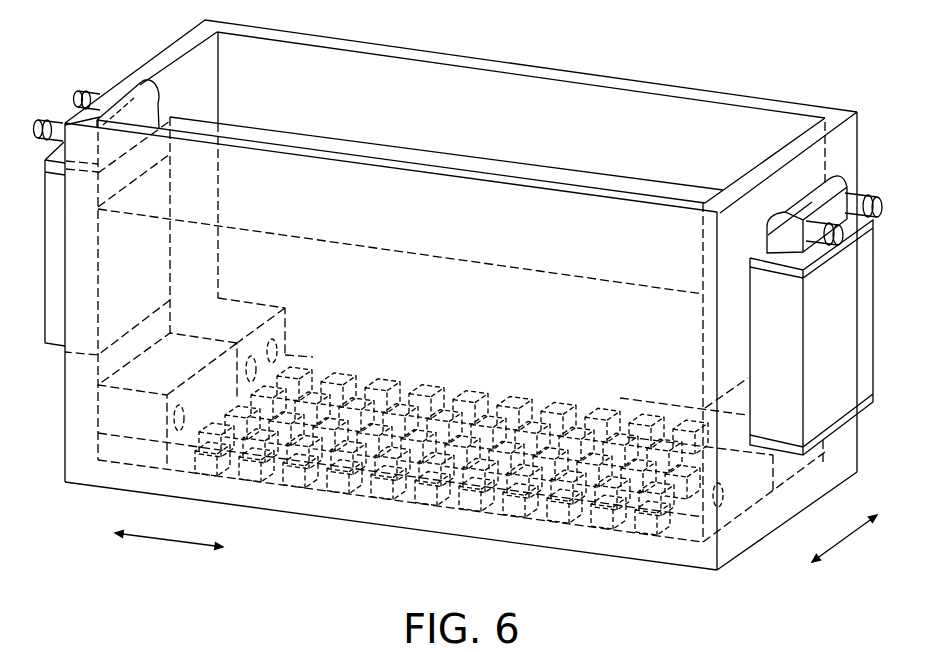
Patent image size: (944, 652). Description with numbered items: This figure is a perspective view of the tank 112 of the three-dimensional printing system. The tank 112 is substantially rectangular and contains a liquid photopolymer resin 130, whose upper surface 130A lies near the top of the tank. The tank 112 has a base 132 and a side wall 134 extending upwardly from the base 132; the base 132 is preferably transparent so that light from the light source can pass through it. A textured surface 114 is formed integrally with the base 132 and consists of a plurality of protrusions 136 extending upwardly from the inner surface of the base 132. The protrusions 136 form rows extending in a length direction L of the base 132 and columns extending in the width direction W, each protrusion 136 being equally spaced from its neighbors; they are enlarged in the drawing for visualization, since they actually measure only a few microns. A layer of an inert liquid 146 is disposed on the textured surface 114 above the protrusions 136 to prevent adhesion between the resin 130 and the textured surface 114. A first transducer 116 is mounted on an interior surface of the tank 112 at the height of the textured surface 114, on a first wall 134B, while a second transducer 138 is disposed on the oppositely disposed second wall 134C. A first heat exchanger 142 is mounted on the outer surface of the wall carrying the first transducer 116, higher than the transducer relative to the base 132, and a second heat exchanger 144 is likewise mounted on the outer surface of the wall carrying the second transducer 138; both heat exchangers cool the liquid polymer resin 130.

The tank 112 is at (178, 36).
The textured surface 114 is at (556, 432).
The first transducer 116 is at (235, 315).
The liquid photopolymer resin 130 is at (437, 160).
The upper surface of the liquid polymer resin 130A is at (557, 176).
The base 132 is at (640, 563).
The side wall 134 is at (860, 143).
The first wall 134B is at (147, 66).
The second wall 134C is at (800, 175).
The protrusions 136 is at (381, 378).
The second transducer 138 is at (738, 472).
The first heat exchanger 142 is at (43, 308).
The second heat exchanger 144 is at (850, 363).
The inert liquid 146 is at (455, 372).
The length direction L is at (170, 542).
The width direction W is at (843, 540).